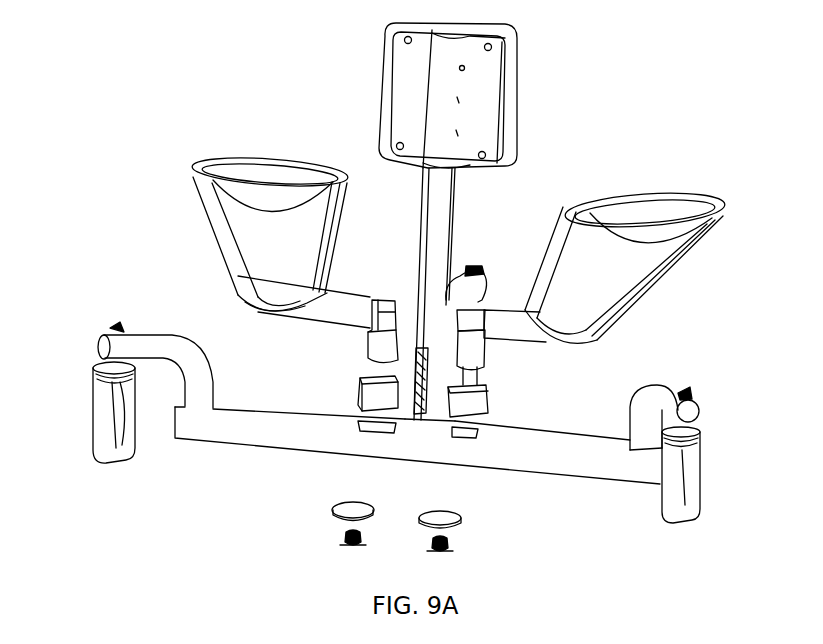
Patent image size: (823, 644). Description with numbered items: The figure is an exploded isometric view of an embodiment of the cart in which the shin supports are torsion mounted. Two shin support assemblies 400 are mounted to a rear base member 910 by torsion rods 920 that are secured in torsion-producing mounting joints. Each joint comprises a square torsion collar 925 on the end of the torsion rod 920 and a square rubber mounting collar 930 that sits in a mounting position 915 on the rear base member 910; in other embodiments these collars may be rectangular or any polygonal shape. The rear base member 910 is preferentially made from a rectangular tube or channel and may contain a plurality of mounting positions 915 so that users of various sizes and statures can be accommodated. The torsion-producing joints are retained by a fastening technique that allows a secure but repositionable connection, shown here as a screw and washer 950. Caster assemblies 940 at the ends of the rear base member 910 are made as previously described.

The shin support assembly 400 is at (260, 185).
The rear base member 910 is at (603, 458).
The mounting position 915 is at (368, 425).
The torsion rod 920 is at (330, 312).
The torsion collar 925 is at (381, 347).
The rubber mounting collar 930 is at (373, 395).
The caster assembly 940 is at (160, 345).
The screw and washer 950 is at (343, 513).